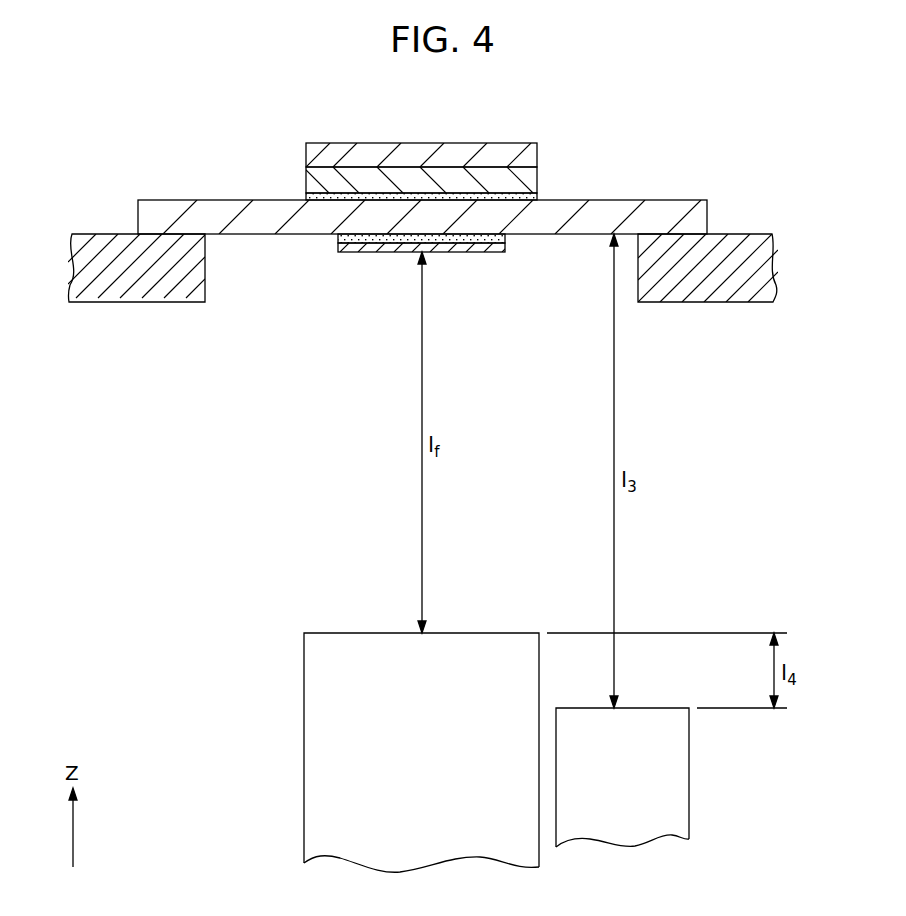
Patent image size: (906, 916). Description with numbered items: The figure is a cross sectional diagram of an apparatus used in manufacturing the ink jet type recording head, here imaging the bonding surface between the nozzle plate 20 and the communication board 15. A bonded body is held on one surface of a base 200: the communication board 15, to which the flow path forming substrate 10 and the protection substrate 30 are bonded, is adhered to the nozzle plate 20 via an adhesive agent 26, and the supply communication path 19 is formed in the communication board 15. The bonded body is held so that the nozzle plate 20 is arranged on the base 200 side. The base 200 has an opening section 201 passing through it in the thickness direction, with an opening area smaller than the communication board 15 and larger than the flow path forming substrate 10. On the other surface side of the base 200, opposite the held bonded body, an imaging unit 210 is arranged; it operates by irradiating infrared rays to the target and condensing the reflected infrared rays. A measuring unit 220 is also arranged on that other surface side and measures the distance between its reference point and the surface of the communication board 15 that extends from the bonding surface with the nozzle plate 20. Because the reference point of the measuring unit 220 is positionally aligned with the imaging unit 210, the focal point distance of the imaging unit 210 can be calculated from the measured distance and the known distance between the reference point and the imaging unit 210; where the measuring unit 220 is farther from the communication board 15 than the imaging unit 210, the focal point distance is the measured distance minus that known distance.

The flow path forming substrate 10 is at (327, 179).
The communication board 15 is at (170, 211).
The supply communication path 19 is at (490, 198).
The nozzle plate 20 is at (380, 247).
The adhesive agent 26 is at (467, 240).
The protection substrate 30 is at (318, 150).
The base 200 is at (148, 290).
The opening section 201 is at (205, 262).
The imaging unit 210 is at (339, 727).
The measuring unit 220 is at (667, 780).